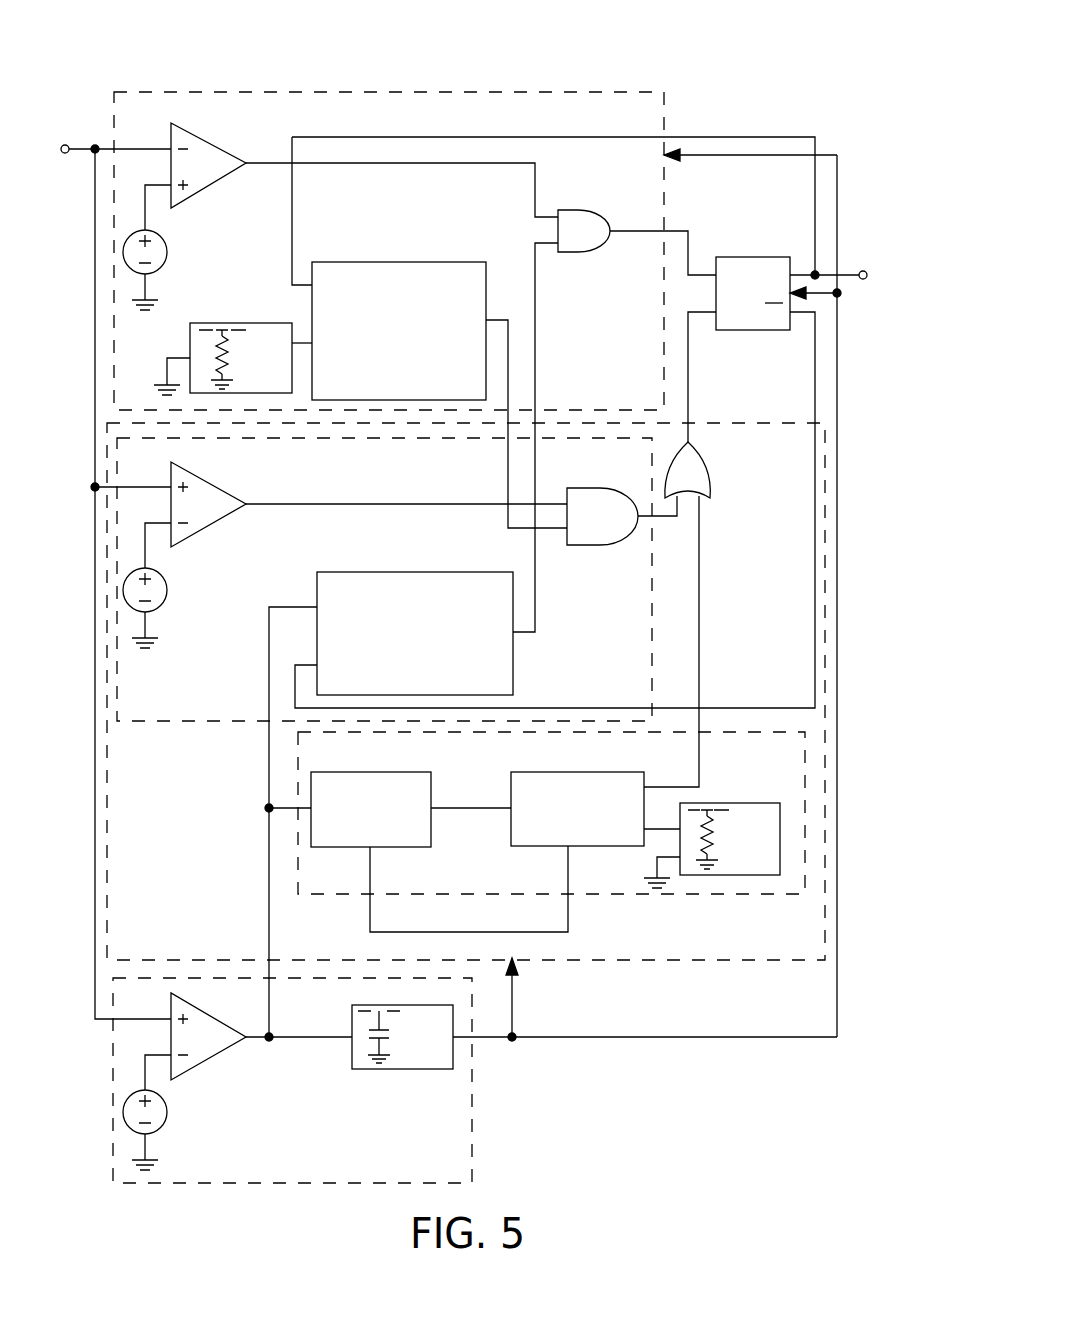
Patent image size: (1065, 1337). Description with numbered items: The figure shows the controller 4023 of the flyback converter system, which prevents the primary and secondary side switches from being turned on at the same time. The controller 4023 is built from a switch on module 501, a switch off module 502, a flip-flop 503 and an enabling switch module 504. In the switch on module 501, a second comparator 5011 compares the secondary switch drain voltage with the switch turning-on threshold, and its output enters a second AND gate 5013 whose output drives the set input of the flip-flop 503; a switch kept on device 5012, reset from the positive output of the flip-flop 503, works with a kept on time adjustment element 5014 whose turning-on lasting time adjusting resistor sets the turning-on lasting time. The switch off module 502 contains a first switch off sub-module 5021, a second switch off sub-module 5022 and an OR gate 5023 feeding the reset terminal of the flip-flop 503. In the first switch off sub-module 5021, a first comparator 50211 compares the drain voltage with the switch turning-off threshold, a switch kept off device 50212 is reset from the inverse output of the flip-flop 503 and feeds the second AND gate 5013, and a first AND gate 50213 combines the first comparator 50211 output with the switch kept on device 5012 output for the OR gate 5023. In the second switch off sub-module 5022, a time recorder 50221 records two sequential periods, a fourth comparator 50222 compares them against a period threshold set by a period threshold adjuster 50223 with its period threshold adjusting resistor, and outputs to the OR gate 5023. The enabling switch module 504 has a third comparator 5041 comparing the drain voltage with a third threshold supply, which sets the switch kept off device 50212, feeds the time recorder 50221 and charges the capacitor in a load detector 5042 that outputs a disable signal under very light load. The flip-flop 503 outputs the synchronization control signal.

The controller 4023 is at (768, 50).
The switch on module 501 is at (405, 92).
The second comparator 5011 is at (207, 136).
The switch kept on device 5012 is at (433, 262).
The second AND gate 5013 is at (586, 210).
The kept on time adjustment element 5014 is at (268, 323).
The flip-flop 503 is at (751, 257).
The switch off module 502 is at (633, 961).
The first switch off sub-module 5021 is at (178, 722).
The first comparator 50211 is at (207, 478).
The switch kept off device 50212 is at (414, 572).
The first AND gate 50213 is at (599, 545).
The OR gate 5023 is at (700, 457).
The second switch off sub-module 5022 is at (706, 895).
The time recorder 50221 is at (350, 772).
The fourth comparator 50222 is at (548, 772).
The period threshold adjuster 50223 is at (712, 803).
The enabling switch module 504 is at (472, 1113).
The third comparator 5041 is at (205, 1062).
The load detector 5042 is at (400, 1069).